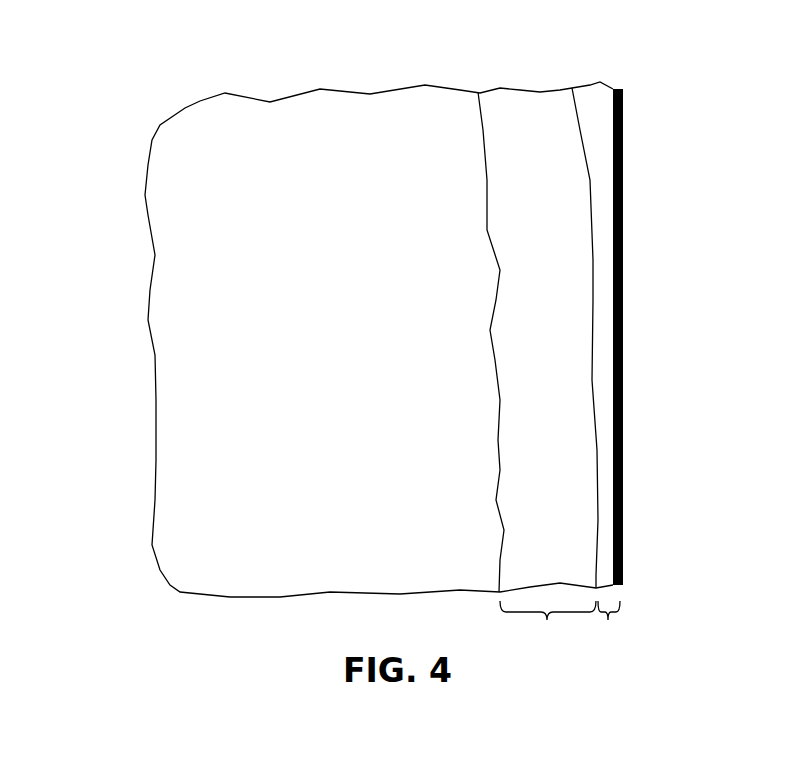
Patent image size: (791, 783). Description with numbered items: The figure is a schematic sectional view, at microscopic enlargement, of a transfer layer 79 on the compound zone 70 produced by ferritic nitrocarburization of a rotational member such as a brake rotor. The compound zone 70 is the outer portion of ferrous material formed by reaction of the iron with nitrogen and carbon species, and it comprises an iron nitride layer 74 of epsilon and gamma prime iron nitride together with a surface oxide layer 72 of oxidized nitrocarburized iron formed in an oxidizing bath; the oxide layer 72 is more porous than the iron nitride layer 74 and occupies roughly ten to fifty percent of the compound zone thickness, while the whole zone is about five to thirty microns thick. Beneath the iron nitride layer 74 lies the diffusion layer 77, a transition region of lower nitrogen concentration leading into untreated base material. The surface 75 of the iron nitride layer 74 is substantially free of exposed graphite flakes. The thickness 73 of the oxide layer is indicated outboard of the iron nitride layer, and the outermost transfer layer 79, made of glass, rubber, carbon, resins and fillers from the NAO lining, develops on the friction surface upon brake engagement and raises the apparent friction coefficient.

The compound zone 70 is at (154, 60).
The oxide layer 72 is at (592, 100).
The thickness of intermediate layer 73 is at (608, 634).
The iron nitride layer 74 is at (535, 110).
The surface of the iron nitride layer 75 is at (548, 634).
The diffusion layer 77 is at (185, 365).
The transfer layer 79 is at (623, 262).